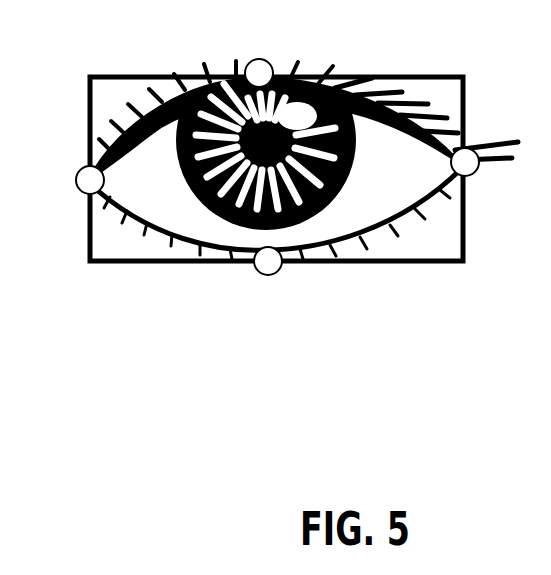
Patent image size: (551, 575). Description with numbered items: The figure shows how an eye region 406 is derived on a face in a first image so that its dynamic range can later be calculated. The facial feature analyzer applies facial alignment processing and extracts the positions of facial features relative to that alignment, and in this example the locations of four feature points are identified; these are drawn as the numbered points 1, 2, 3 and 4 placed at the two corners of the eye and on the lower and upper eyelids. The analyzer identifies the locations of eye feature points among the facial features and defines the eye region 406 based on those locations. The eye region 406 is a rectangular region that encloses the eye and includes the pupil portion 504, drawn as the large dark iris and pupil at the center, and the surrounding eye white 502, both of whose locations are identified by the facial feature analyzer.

The eye region 406 is at (117, 75).
The eye white 502 is at (303, 160).
The pupil portion 504 is at (266, 140).
The left eye corner landmark point 1 is at (90, 180).
The right eye corner landmark point 2 is at (465, 162).
The lower eyelid landmark point 3 is at (268, 261).
The upper eyelid landmark point 4 is at (259, 73).